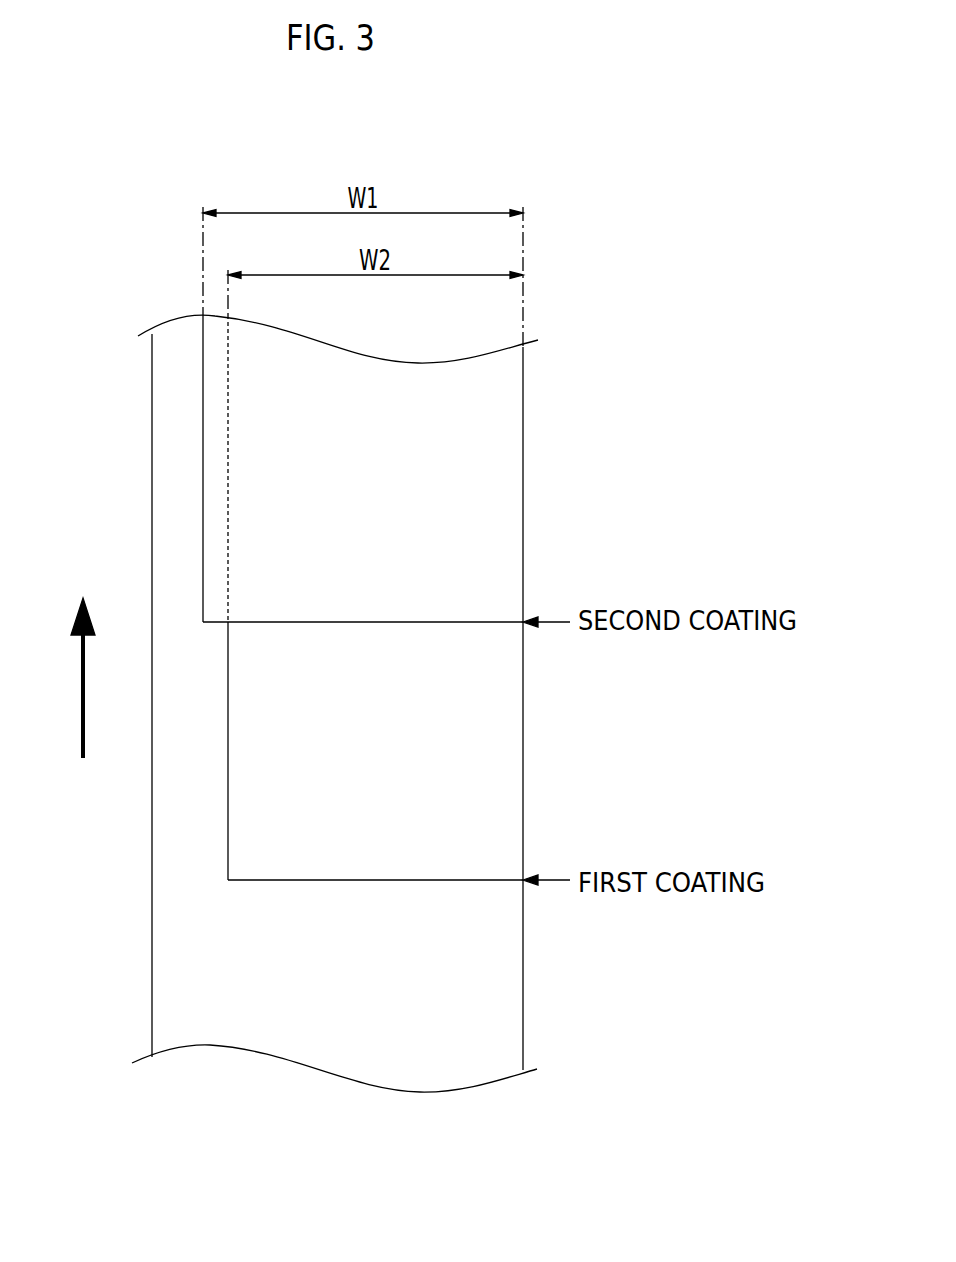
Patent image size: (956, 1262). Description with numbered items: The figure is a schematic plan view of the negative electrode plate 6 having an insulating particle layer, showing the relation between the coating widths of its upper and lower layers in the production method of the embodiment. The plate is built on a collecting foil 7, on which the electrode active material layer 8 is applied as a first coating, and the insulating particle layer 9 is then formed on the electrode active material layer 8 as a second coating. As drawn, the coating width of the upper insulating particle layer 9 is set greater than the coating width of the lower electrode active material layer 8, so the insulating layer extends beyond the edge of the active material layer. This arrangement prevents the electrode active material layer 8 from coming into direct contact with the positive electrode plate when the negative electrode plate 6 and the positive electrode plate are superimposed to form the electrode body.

The negative electrode plate 6 is at (532, 422).
The collecting foil 7 is at (480, 967).
The electrode active material layer 8 is at (482, 758).
The insulating particle layer 9 is at (483, 507).